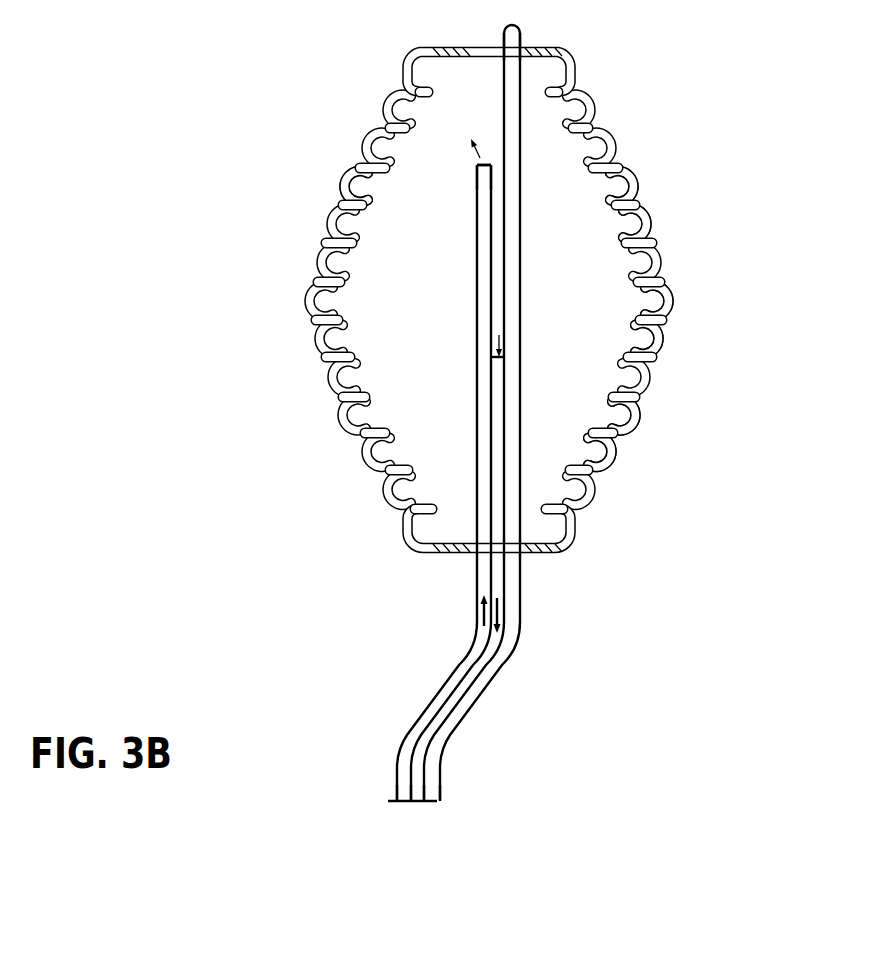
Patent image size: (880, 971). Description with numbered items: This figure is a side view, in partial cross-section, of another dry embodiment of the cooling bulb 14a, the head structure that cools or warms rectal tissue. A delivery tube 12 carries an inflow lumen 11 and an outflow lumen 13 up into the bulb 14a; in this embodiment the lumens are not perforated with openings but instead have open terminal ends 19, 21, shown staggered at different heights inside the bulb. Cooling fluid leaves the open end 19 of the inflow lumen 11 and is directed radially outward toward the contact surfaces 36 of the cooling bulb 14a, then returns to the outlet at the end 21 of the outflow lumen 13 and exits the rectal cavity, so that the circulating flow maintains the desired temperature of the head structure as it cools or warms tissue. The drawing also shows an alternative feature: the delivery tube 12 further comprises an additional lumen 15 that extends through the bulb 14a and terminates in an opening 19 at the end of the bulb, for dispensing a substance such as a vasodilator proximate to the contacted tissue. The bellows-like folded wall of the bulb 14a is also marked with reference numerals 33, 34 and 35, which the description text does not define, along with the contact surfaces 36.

The inflow lumen 11 is at (440, 711).
The delivery tube 12 is at (380, 771).
The outflow lumen 13 is at (485, 711).
The cooling bulb 14a is at (520, 300).
The additional lumen 15 is at (534, 333).
The open terminal end 19 is at (496, 99).
The open terminal end 21 is at (538, 351).
The balloon lobe 33 is at (489, 172).
The balloon fold surface 34 is at (672, 208).
The balloon lobes 35 is at (698, 321).
The contact surfaces 36 is at (655, 433).